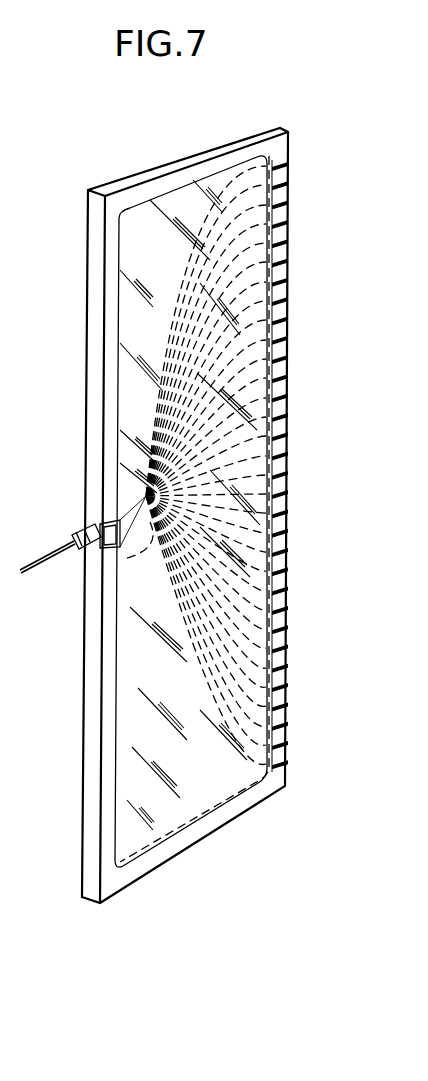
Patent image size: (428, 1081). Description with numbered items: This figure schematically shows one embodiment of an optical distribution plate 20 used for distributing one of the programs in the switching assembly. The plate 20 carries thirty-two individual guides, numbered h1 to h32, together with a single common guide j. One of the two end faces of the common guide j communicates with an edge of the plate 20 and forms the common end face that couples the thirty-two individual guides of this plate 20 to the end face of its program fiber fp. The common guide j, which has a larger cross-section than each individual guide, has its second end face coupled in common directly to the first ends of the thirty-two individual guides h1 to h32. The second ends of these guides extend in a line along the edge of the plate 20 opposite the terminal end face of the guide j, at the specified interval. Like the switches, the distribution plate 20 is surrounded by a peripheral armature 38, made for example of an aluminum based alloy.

The plate 20 is at (287, 584).
The peripheral armature 38 is at (282, 388).
The individual guide h1 is at (260, 174).
The individual guide h32 is at (202, 673).
The fluid pipe fp is at (65, 546).
The common guide j is at (113, 547).